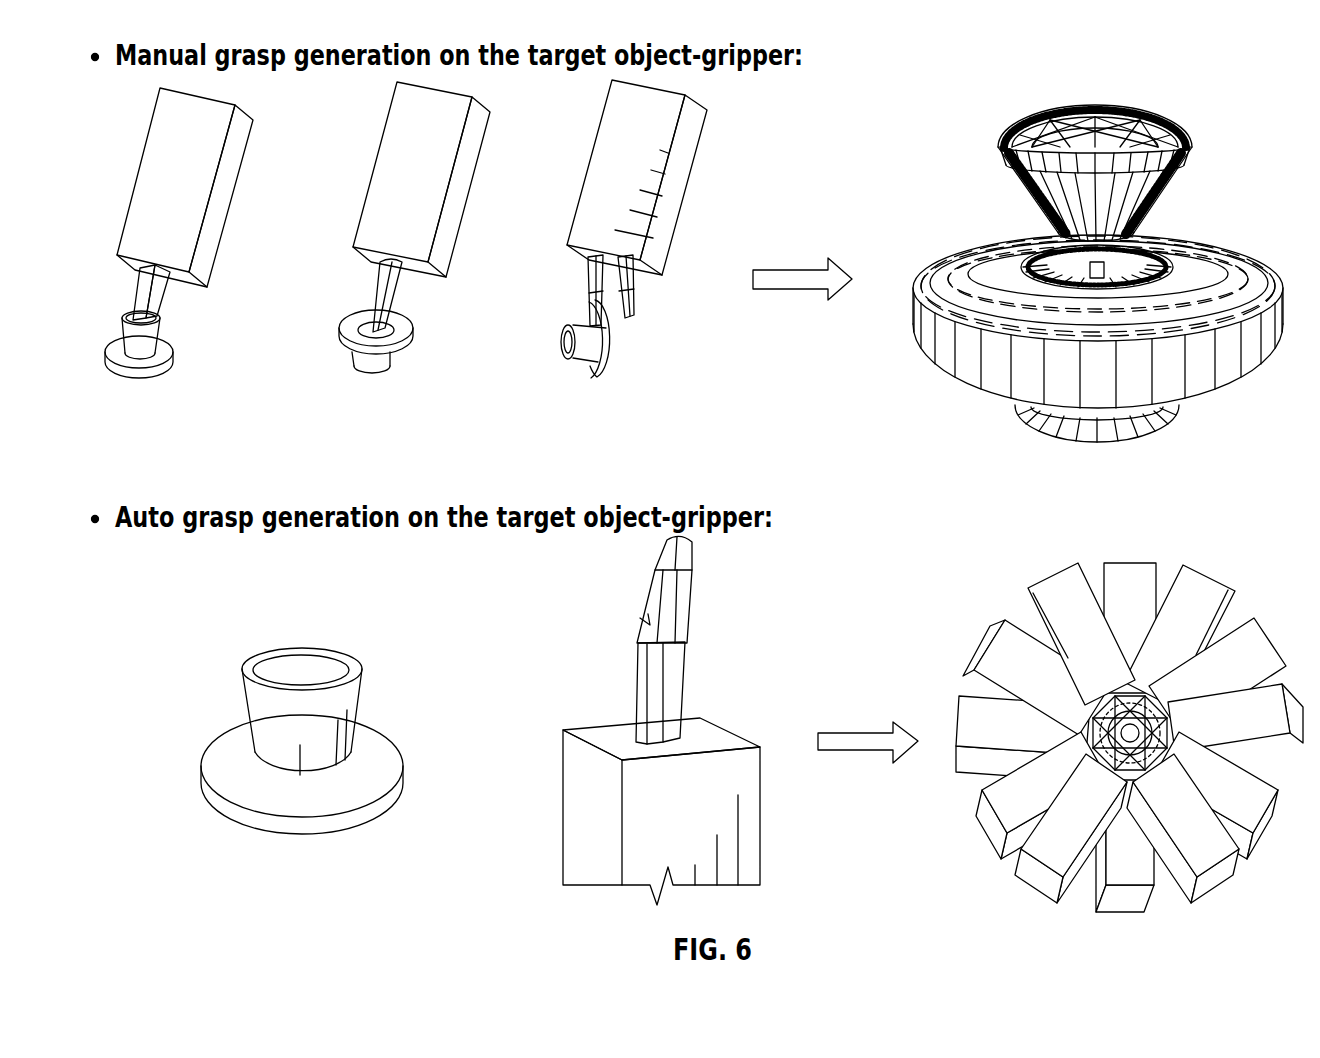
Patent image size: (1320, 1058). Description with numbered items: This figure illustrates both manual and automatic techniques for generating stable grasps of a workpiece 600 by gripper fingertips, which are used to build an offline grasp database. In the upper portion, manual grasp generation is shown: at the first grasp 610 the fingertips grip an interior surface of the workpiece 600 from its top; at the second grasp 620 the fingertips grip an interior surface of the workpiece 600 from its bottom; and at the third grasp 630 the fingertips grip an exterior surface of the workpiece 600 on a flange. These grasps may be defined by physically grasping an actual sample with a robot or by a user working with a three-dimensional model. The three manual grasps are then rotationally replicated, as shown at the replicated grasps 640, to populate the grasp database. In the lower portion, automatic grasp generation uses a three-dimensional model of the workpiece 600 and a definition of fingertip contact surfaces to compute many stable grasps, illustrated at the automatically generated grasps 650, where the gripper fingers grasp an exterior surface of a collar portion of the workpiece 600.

The workpiece 600 is at (173, 356).
The manual grasp from top 610 is at (162, 437).
The manual grasp from bottom 620 is at (393, 436).
The manual grasp on flange 630 is at (622, 421).
The rotationally replicated grasps 640 is at (1241, 201).
The automatically generated grasps 650 is at (1274, 590).